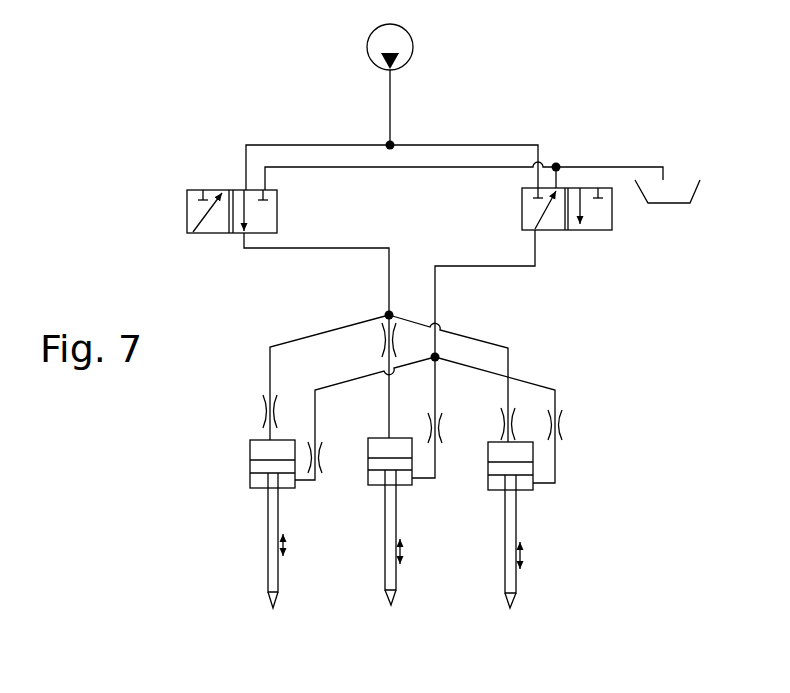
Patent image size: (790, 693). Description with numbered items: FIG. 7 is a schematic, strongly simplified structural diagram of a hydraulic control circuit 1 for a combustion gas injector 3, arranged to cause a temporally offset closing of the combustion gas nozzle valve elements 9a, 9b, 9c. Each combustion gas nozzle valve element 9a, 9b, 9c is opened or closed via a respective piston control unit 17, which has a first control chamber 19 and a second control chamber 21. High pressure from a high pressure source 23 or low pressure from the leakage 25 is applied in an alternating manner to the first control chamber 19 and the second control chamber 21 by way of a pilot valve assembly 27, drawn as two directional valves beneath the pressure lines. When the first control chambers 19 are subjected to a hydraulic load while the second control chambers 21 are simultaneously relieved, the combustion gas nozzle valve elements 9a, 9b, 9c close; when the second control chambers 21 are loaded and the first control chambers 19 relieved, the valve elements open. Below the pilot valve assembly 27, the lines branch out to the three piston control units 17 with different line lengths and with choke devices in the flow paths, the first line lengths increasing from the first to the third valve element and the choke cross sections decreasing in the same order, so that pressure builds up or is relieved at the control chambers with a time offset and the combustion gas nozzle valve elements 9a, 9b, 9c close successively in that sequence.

The hydraulic circuit 1 is at (295, 137).
The combustion gas injector 3 is at (355, 310).
The combustion gas nozzle valve element 9a is at (270, 574).
The combustion gas nozzle valve element 9b is at (385, 575).
The combustion gas nozzle valve element 9c is at (507, 578).
The piston control unit 17 is at (241, 461).
The first control chamber 19 is at (258, 450).
The second control chamber 21 is at (257, 478).
The high pressure source 23 is at (401, 47).
The leakage 25 is at (683, 177).
The pilot valve assembly 27 is at (442, 198).